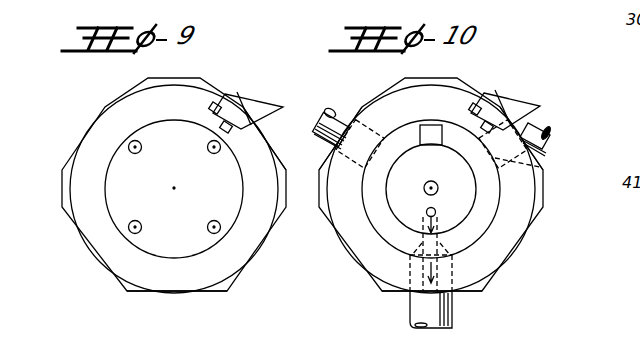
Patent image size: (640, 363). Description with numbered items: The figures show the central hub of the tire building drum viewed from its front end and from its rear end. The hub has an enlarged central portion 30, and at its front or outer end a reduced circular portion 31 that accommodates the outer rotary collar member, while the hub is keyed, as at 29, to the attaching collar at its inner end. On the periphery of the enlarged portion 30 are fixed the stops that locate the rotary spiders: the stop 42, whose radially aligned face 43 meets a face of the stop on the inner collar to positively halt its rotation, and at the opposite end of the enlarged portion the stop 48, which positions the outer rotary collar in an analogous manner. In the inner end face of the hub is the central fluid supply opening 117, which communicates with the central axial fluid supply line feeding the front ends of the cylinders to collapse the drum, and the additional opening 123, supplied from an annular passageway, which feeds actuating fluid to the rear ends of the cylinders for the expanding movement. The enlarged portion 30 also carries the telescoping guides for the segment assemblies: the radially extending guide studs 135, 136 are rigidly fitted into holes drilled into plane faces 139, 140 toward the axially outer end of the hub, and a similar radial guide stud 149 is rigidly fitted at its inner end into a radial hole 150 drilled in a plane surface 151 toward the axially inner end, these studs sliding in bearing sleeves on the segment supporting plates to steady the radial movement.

In FIG. 10, the key 29 is at (438, 126).
In FIG. 9, the central portion of the hub 30 is at (105, 112).
In FIG. 9, the reduced circular portion 31 is at (164, 250).
In FIG. 10, the projecting stop 42 is at (510, 100).
In FIG. 10, the radially aligned face 43 is at (539, 117).
In FIG. 9, the stop 48 is at (247, 97).
In FIG. 10, the fluid supply opening 117 is at (443, 171).
In FIG. 10, the additional opening 123 is at (436, 209).
In FIG. 10, the guide stud 135 is at (314, 142).
In FIG. 10, the guide stud 136 is at (452, 318).
In FIG. 9, the plane face 139 is at (266, 128).
In FIG. 10, the plane face 139 is at (349, 119).
In FIG. 9, the plane face 140 is at (210, 292).
In FIG. 10, the plane face 140 is at (395, 293).
In FIG. 10, the radial guide stud 149 is at (547, 133).
In FIG. 10, the radial hole 150 is at (540, 167).
In FIG. 9, the plane surface 151 is at (92, 128).
In FIG. 10, the plane surface 151 is at (545, 150).